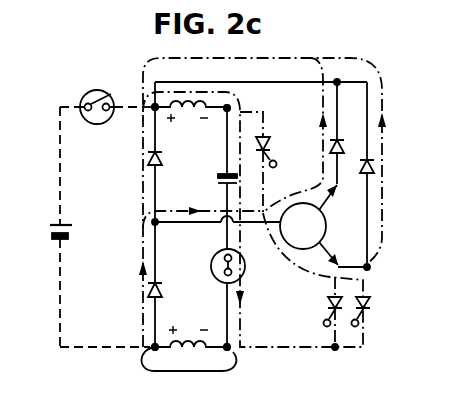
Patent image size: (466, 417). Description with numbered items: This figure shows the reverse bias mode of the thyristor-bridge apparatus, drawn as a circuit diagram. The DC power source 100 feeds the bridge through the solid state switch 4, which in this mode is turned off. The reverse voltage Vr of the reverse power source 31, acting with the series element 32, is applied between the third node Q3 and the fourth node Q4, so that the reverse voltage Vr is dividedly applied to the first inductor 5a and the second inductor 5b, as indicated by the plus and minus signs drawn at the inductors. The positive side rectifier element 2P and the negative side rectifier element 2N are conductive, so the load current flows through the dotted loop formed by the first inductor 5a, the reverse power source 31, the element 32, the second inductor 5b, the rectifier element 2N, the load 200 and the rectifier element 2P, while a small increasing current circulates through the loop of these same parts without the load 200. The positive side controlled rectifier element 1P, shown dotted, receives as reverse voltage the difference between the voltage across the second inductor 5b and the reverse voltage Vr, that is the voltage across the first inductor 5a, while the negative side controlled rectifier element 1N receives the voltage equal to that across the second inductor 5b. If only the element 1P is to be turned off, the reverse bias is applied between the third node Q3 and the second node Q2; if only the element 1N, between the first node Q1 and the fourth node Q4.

The solid state switch 4 is at (96, 124).
The DC power source 100 is at (122, 235).
The first node Q1 is at (155, 110).
The second node Q2 is at (153, 346).
The third node Q3 is at (229, 109).
The fourth node Q4 is at (236, 360).
The first inductor 5a is at (188, 111).
The second inductor 5b is at (188, 352).
The positive side rectifier element 2P is at (195, 170).
The negative side rectifier element 2N is at (198, 305).
The positive side controlled rectifier element 1P is at (267, 143).
The negative side controlled rectifier element 1N is at (413, 325).
The reverse power source 31 is at (237, 178).
The reverse bias means element 32 is at (215, 254).
The reverse voltage Vr is at (215, 178).
The load 200 is at (321, 236).